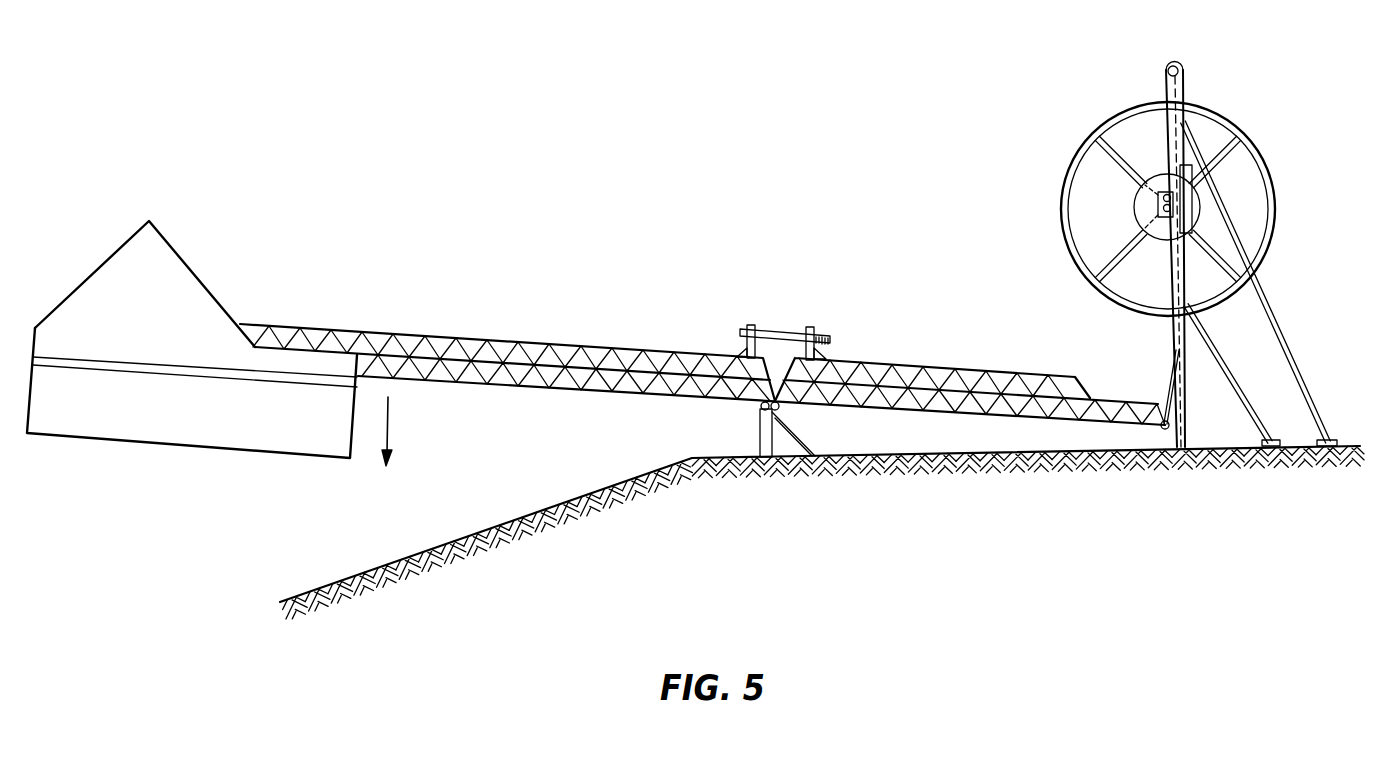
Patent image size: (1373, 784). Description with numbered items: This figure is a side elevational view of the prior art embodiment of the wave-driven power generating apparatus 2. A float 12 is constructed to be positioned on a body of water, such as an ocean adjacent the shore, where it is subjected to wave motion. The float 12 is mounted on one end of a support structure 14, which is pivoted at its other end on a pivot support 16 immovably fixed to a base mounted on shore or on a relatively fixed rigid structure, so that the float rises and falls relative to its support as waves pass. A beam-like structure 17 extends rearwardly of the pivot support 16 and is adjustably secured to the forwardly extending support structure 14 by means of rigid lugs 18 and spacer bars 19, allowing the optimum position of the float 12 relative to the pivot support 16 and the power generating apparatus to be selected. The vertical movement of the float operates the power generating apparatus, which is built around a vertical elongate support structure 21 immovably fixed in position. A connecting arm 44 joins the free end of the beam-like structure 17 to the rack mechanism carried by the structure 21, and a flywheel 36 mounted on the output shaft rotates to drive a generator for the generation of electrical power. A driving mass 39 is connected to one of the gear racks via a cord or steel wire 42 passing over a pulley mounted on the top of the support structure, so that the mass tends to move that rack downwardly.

The reel assembly 2 is at (1128, 85).
The float 12 is at (165, 273).
The support structure 14 is at (468, 345).
The pivot support 16 is at (760, 405).
The beam-like structure 17 is at (998, 378).
The rigid lugs 18 is at (750, 327).
The spacer bars 19 is at (780, 330).
The vertical elongate support structure 21 is at (1185, 70).
The flywheel 36 is at (1066, 185).
The driving mass 39 is at (1190, 202).
The cord or steel wire 42 is at (1185, 110).
The connecting arm 44 is at (1167, 388).